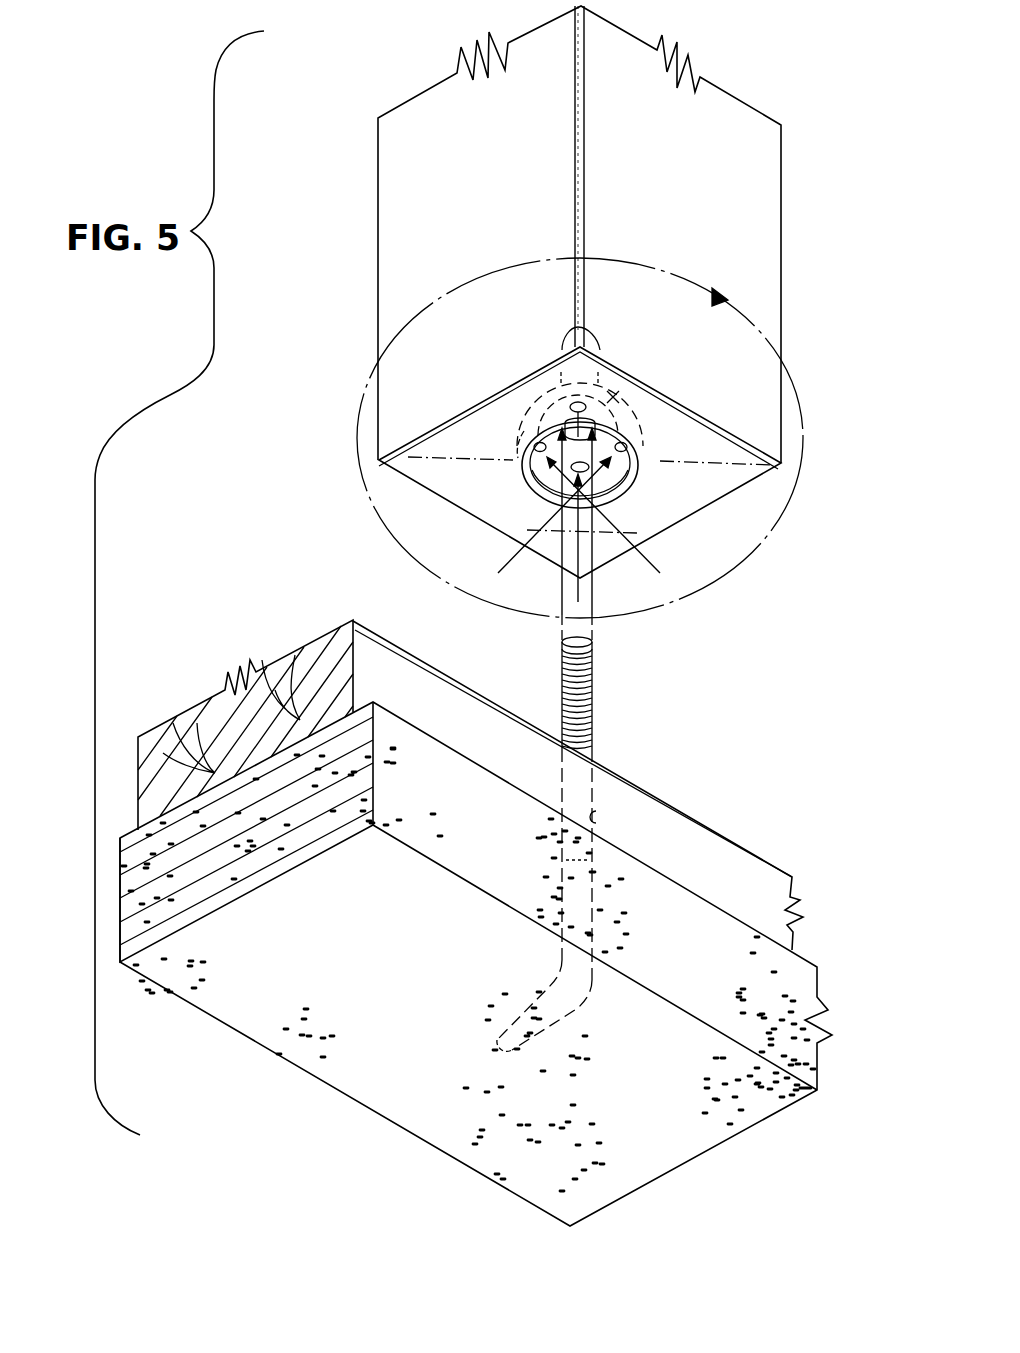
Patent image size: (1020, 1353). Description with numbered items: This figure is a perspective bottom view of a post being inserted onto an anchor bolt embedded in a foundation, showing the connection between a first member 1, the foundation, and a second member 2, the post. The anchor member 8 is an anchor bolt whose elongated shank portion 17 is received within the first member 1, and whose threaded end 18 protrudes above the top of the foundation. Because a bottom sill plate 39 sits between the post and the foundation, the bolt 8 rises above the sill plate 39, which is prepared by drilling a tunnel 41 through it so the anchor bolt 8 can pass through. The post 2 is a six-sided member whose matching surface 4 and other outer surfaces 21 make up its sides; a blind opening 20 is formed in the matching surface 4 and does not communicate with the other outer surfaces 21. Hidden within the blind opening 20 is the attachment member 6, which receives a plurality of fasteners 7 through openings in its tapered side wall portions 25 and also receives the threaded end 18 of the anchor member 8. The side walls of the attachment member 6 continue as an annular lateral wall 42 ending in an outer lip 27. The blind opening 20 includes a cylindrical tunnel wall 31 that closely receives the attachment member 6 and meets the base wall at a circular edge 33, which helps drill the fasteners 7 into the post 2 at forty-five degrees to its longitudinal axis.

The first member 1 is at (818, 995).
The second member 2 is at (785, 197).
The matching surface 4 is at (752, 468).
The attachment member 6 is at (619, 504).
The fasteners 7 is at (527, 421).
The anchor member 8 is at (596, 782).
The elongated shank portion 17 is at (596, 866).
The threaded end 18 is at (597, 688).
The blind opening 20 is at (648, 441).
The other outer surfaces 21 is at (416, 198).
The tapered side wall portions 25 is at (620, 391).
The outer lip 27 is at (542, 472).
The tunnel wall 31 is at (500, 464).
The circular edge 33 is at (522, 434).
The bottom sill plate 39 is at (770, 866).
The tunnel 41 is at (605, 817).
The lateral wall 42 is at (541, 486).